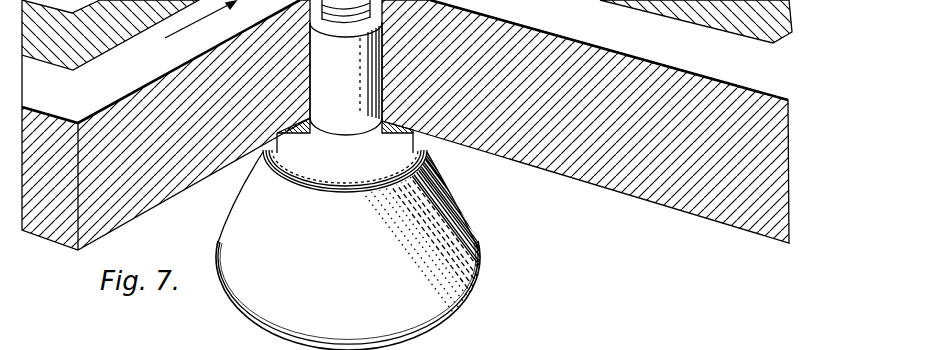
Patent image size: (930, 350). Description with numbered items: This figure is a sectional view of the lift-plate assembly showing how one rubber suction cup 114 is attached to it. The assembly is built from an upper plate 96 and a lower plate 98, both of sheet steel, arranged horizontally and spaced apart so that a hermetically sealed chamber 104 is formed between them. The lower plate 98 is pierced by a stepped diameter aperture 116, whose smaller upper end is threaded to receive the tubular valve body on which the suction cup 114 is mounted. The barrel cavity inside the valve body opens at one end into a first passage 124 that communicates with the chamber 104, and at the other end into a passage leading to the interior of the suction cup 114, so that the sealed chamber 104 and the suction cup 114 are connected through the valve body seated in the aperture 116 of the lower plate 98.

The upper plate 96 is at (123, 27).
The lower plate 98 is at (618, 180).
The hermetically sealed chamber 104 is at (612, 35).
The suction cup 114 is at (472, 220).
The stepped diameter aperture 116 is at (386, 75).
The first passage 124 is at (425, 349).